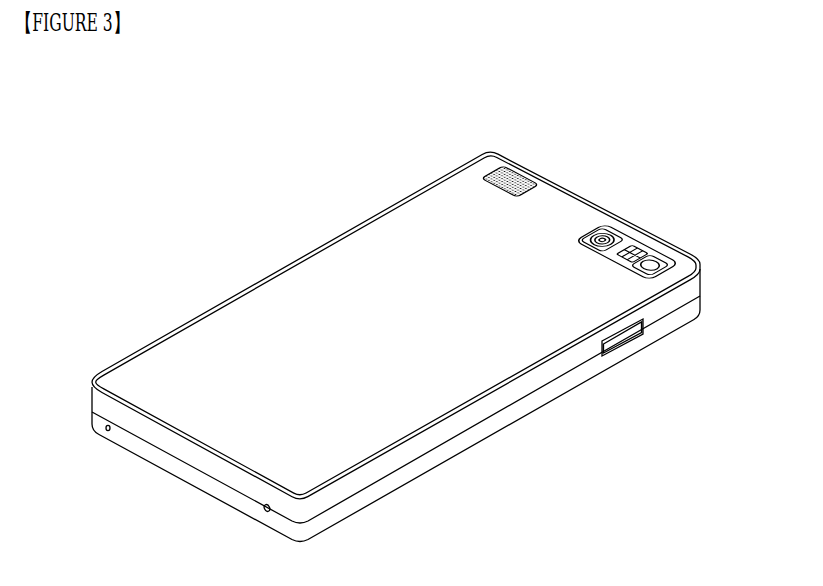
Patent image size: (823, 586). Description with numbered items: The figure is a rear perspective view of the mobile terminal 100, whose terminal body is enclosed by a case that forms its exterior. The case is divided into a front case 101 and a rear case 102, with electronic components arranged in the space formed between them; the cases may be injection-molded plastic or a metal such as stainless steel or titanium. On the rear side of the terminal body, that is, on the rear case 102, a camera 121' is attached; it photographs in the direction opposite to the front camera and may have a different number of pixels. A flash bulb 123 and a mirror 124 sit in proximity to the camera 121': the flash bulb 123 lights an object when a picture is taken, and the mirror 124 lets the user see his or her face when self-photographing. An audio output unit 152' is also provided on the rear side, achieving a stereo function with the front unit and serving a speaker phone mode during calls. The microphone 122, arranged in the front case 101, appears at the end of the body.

The mobile terminal 100 is at (398, 317).
The front case 101 is at (700, 308).
The rear case 102 is at (699, 287).
The camera 121' is at (629, 204).
The microphone 122 is at (106, 430).
The flash bulb 123 is at (640, 248).
The mirror 124 is at (662, 263).
The audio output unit 152' is at (535, 145).